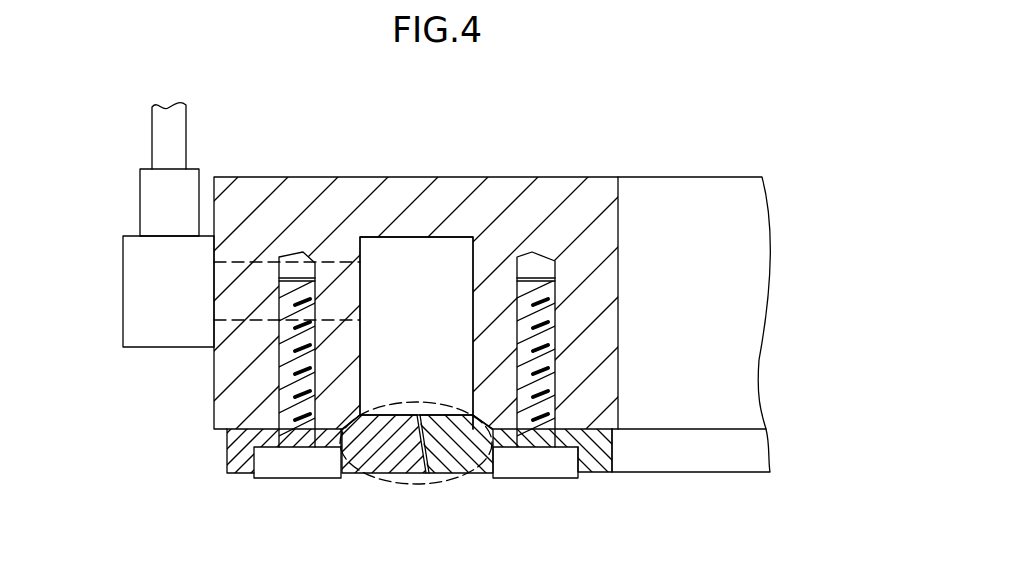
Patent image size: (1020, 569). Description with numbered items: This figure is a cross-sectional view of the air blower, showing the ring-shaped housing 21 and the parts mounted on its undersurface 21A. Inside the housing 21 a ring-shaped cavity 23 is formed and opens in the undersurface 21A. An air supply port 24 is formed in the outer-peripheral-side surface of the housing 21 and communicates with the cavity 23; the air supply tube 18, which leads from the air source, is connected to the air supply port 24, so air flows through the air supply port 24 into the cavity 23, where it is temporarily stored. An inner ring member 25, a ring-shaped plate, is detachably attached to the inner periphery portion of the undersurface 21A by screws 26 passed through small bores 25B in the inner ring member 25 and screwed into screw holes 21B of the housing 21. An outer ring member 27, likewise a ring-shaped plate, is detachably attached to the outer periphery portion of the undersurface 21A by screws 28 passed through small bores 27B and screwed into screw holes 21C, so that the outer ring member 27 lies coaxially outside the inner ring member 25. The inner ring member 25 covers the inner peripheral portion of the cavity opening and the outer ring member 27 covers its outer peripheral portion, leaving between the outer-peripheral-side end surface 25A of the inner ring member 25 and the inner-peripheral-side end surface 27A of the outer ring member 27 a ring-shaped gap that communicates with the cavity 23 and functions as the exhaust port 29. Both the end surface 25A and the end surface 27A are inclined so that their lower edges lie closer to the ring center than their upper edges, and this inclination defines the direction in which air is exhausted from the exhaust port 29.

The air supply tube 18 is at (128, 293).
The housing 21 is at (597, 185).
The undersurface of the housing 21A is at (227, 449).
The screw holes 21B is at (540, 253).
The screw holes 21C is at (307, 257).
The cavity 23 is at (418, 245).
The air supply ports 24 is at (245, 264).
The inner ring member 25 is at (457, 467).
The outer-peripheral-side end surface of the inner ring member 25A is at (422, 432).
The small bores 25B is at (545, 427).
The screws 26 is at (547, 466).
The outer ring member 27 is at (380, 467).
The inner-peripheral-side end surface of the outer ring member 27A is at (417, 415).
The small bores 27B is at (288, 425).
The screws 28 is at (283, 470).
The exhaust port 29 is at (423, 474).